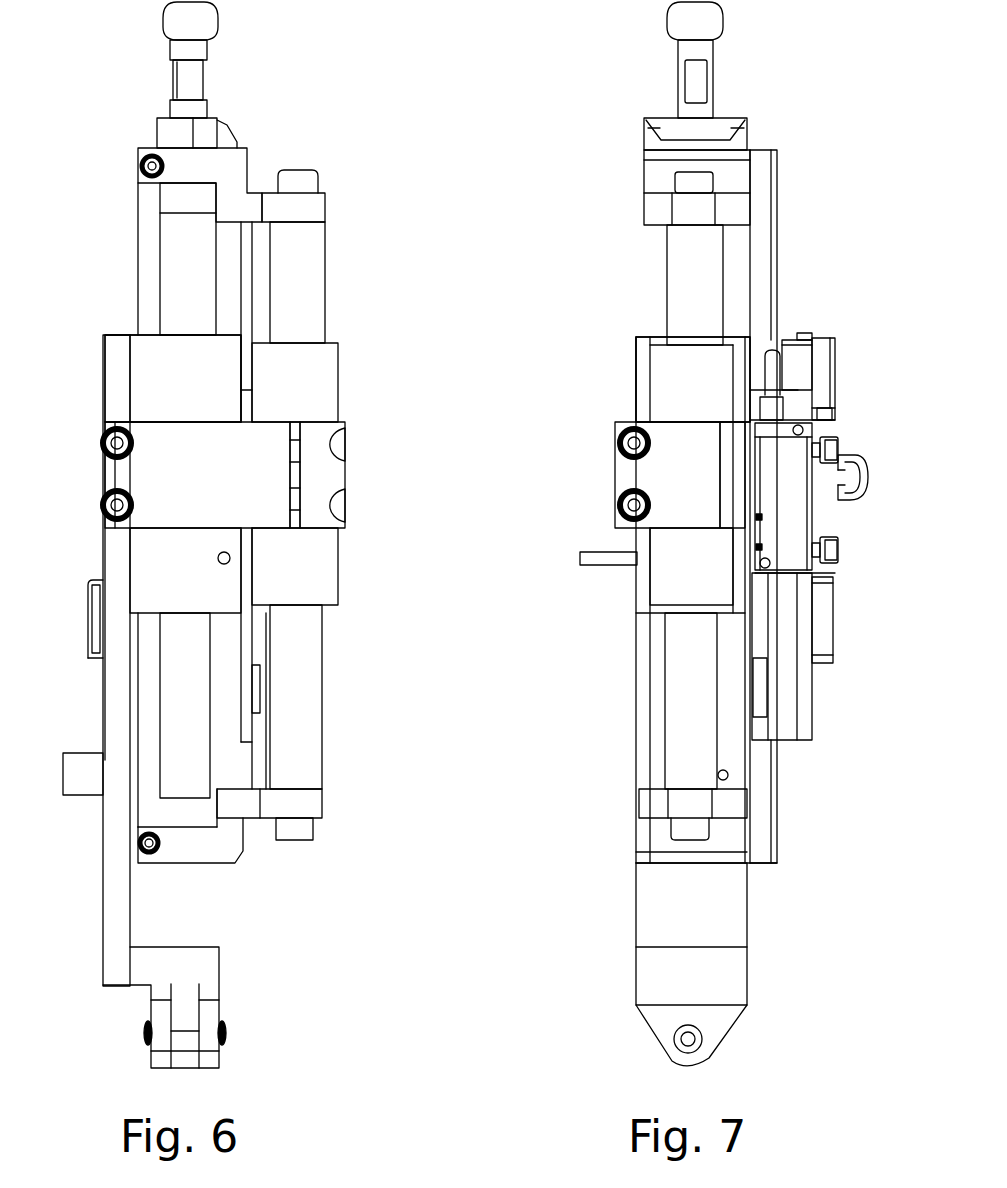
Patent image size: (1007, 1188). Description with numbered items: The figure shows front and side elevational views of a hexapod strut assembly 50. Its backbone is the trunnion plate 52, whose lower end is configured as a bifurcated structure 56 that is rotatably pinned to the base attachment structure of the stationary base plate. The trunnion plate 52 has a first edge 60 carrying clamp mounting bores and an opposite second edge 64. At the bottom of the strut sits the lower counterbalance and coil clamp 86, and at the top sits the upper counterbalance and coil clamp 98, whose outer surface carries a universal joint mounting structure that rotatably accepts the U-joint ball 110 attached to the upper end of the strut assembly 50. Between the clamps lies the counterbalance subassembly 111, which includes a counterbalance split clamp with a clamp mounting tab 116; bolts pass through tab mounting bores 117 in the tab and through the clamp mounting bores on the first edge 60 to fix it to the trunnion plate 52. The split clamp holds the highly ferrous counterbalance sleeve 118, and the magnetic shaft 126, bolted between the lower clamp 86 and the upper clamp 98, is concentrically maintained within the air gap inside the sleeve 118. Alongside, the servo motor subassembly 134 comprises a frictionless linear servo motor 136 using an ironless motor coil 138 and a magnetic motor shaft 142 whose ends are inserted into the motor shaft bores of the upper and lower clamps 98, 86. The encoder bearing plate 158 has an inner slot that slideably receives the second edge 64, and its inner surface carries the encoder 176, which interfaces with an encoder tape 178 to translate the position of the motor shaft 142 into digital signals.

In FIG. 6, the strut assembly 50 is at (299, 45).
In FIG. 7, the strut assembly 50 is at (599, 50).
In FIG. 6, the trunnion plate 52 is at (85, 647).
In FIG. 7, the trunnion plate 52 is at (756, 934).
In FIG. 6, the bifurcated structure 56 is at (203, 1020).
In FIG. 7, the bifurcated structure 56 is at (695, 982).
In FIG. 6, the first edge 60 is at (112, 915).
In FIG. 7, the second edge 64 is at (740, 888).
In FIG. 6, the lower counterbalance and coil clamp 86 is at (293, 805).
In FIG. 7, the lower counterbalance and coil clamp 86 is at (652, 807).
In FIG. 6, the upper counterbalance and coil clamp 98 is at (205, 168).
In FIG. 7, the upper counterbalance and coil clamp 98 is at (733, 185).
In FIG. 6, the U-joint ball 110 is at (185, 17).
In FIG. 7, the U-joint ball 110 is at (700, 26).
In FIG. 6, the counterbalance subassembly 111 is at (294, 475).
In FIG. 7, the counterbalance subassembly 111 is at (607, 479).
In FIG. 6, the clamp mounting tab 116 is at (242, 482).
In FIG. 7, the clamp mounting tab 116 is at (675, 474).
In FIG. 6, the tab mounting bores 117 is at (103, 450).
In FIG. 7, the tab mounting bores 117 is at (634, 474).
In FIG. 6, the counterbalance sleeve 118 is at (300, 585).
In FIG. 7, the counterbalance sleeve 118 is at (675, 585).
In FIG. 6, the magnetic shaft 126 is at (297, 262).
In FIG. 7, the magnetic shaft 126 is at (690, 268).
In FIG. 6, the servo motor subassembly 134 is at (333, 363).
In FIG. 7, the servo motor subassembly 134 is at (693, 600).
In FIG. 6, the linear servo motor 136 is at (333, 363).
In FIG. 7, the linear servo motor 136 is at (693, 600).
In FIG. 6, the ironless motor coil 138 is at (188, 362).
In FIG. 7, the ironless motor coil 138 is at (693, 600).
In FIG. 6, the magnetic motor shaft 142 is at (188, 247).
In FIG. 7, the encoder bearing plate 158 is at (763, 313).
In FIG. 7, the encoder 176 is at (783, 515).
In FIG. 7, the encoder tape 178 is at (780, 637).